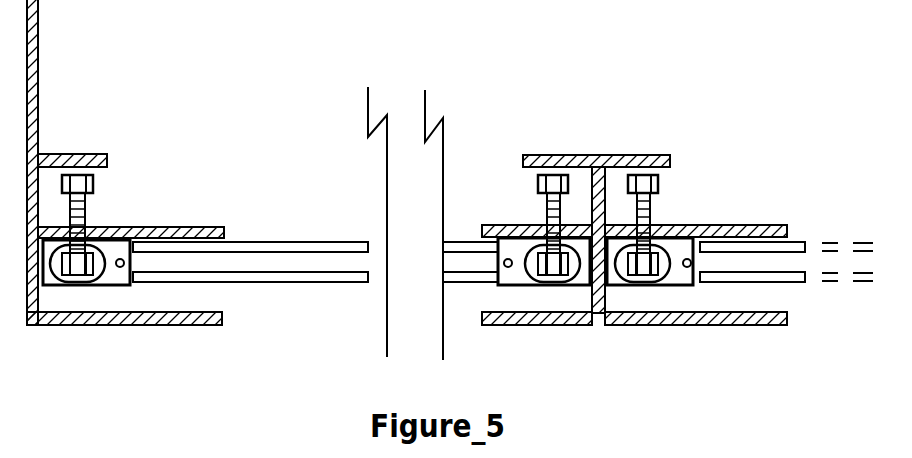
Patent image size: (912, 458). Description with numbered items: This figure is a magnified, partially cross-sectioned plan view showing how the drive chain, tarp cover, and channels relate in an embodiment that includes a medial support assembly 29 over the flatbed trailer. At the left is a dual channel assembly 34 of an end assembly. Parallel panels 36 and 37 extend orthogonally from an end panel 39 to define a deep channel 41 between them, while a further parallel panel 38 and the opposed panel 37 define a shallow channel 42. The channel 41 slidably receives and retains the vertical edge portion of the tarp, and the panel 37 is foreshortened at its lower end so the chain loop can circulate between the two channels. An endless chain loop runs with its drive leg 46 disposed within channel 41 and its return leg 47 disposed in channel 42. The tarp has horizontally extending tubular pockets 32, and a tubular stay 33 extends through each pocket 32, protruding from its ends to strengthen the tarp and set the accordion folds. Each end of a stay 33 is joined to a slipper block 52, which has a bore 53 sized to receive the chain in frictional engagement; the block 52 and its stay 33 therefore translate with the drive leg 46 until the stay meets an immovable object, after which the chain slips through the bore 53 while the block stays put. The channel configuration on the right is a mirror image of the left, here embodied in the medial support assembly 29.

The medial support assembly 29 is at (600, 155).
The tubular pocket 32 is at (343, 283).
The tubular stay 33 is at (307, 263).
The dual channel assembly 34 is at (238, 84).
The parallel panel 36 is at (129, 326).
The parallel panel 37 is at (208, 227).
The parallel panel 38 is at (79, 153).
The end panel 39 is at (38, 7).
The channel 41 is at (210, 292).
The shallow channel 42 is at (98, 207).
The drive leg 46 is at (73, 277).
The return leg 47 is at (93, 183).
The slipper block 52 is at (522, 288).
The bore 53 is at (577, 273).